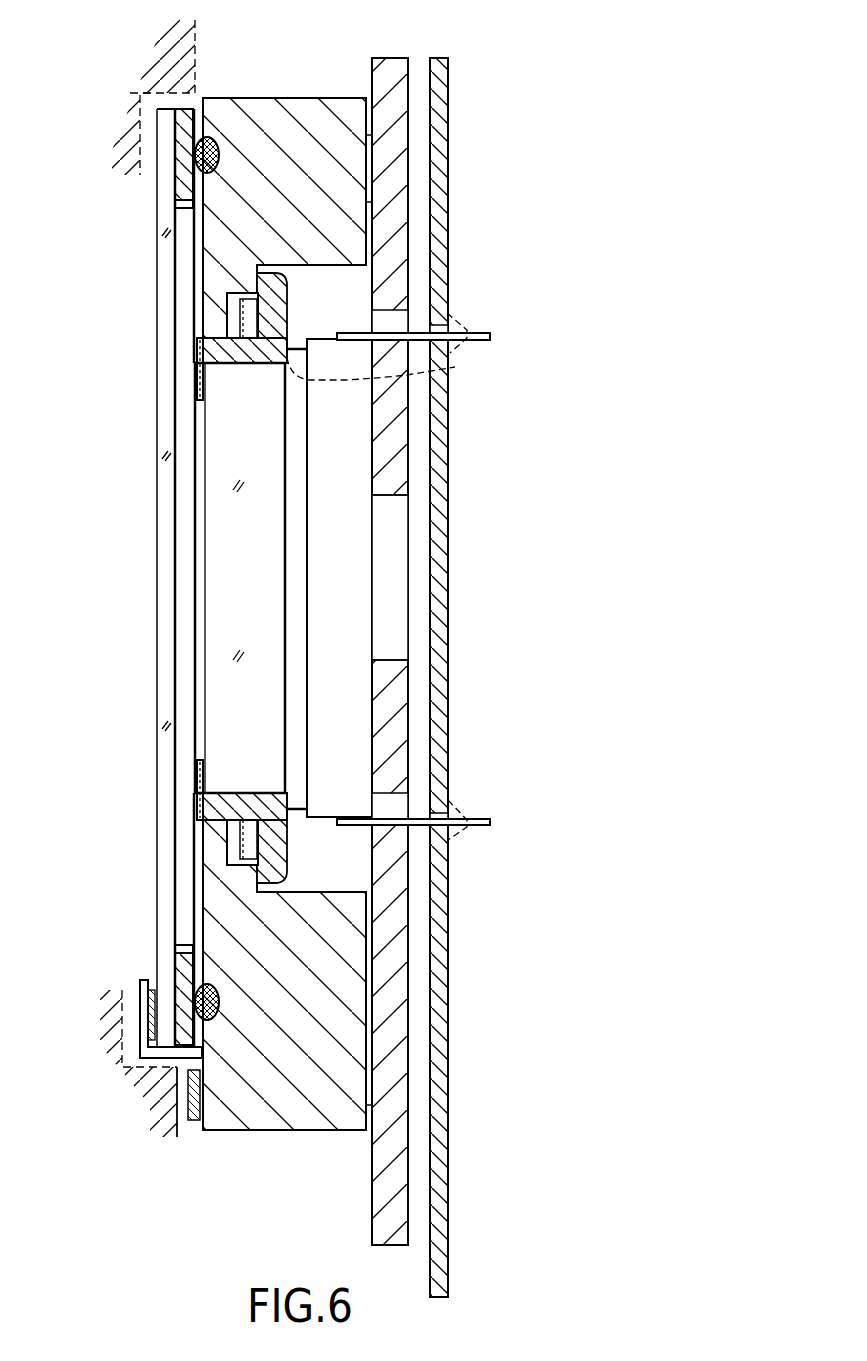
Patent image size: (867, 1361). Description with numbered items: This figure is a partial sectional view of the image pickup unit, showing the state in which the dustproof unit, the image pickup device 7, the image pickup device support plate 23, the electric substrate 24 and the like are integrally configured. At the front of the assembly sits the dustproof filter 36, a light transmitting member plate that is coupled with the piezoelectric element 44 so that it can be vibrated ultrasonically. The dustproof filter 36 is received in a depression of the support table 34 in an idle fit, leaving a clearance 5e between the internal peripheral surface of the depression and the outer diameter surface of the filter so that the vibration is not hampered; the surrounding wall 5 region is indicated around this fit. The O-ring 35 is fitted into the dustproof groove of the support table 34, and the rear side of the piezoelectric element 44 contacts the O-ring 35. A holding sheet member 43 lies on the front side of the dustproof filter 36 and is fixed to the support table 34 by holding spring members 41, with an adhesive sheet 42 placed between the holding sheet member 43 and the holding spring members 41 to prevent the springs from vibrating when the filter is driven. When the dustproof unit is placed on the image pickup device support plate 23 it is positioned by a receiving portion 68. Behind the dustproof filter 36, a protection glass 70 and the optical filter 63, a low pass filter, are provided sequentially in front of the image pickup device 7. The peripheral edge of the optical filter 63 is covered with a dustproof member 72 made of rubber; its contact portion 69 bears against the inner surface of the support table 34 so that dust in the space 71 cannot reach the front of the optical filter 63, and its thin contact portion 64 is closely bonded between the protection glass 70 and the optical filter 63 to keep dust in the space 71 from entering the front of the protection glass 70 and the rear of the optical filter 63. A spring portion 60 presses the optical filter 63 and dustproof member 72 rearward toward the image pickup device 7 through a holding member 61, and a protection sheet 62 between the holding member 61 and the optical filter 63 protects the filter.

The wall 5 is at (196, 27).
The clearance 5e is at (168, 100).
The image pickup device 7 is at (347, 532).
The image pickup device support plate 23 is at (372, 75).
The electric substrate 24 is at (449, 78).
The support table 34 is at (257, 100).
The O-ring 35 is at (207, 137).
The dustproof filter 36 is at (160, 139).
The holding spring members 41 is at (140, 1047).
The adhesive sheet 42 is at (148, 1010).
The holding sheet member 43 is at (172, 973).
The piezoelectric element 44 is at (180, 183).
The spring portion 60 is at (233, 317).
The holding member 61 is at (199, 352).
The protection sheet 62 is at (200, 396).
The optical filter 63 is at (215, 623).
The thin contact portion 64 is at (455, 366).
The receiving portion 68 is at (375, 165).
The contact portion 69 is at (300, 263).
The protection glass 70 is at (297, 420).
The space 71 is at (347, 311).
The dustproof member 72 is at (282, 307).